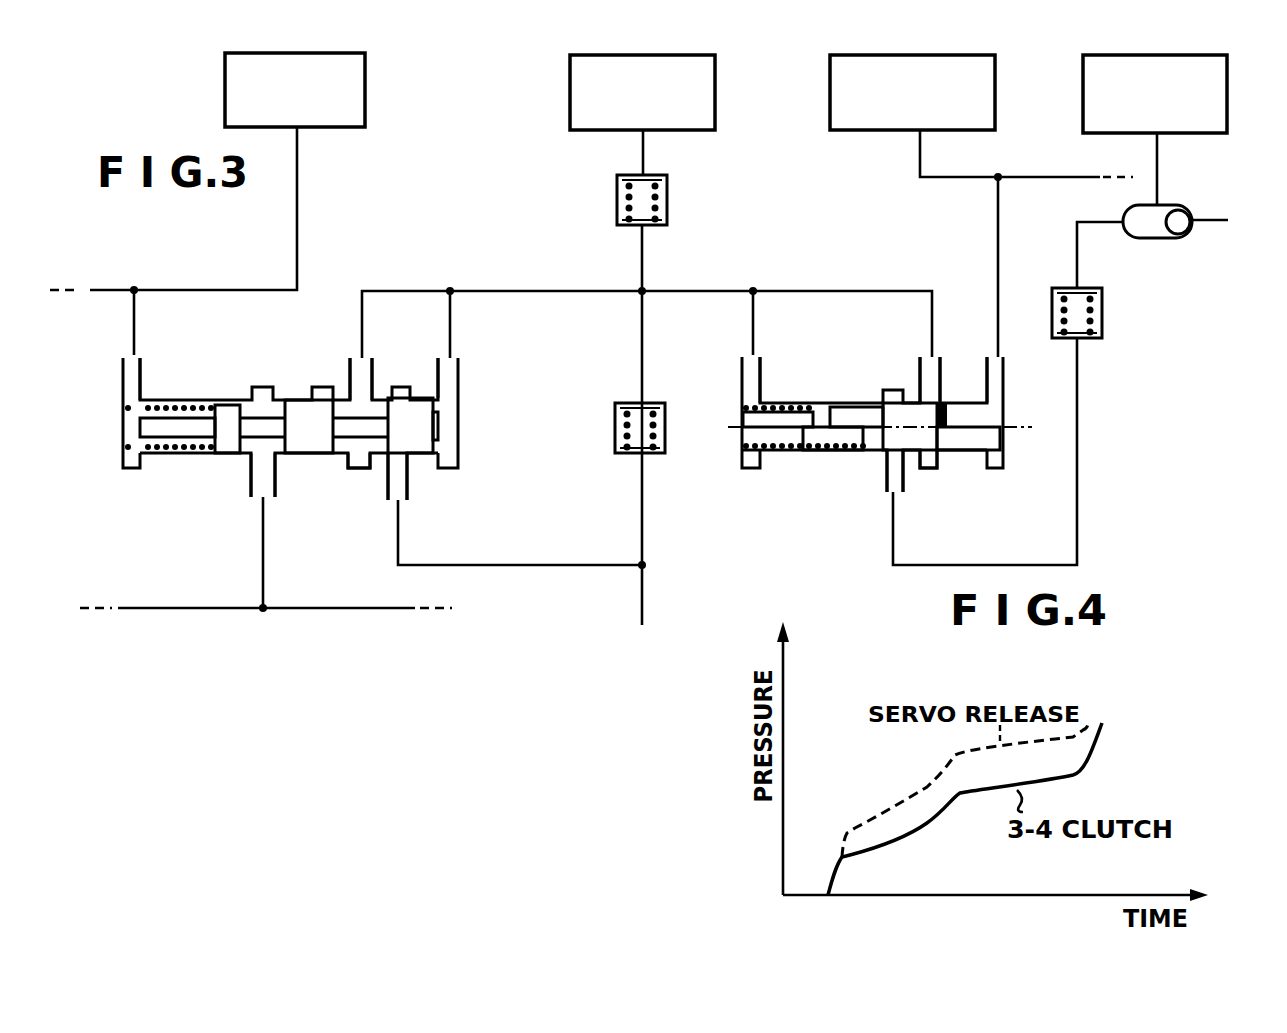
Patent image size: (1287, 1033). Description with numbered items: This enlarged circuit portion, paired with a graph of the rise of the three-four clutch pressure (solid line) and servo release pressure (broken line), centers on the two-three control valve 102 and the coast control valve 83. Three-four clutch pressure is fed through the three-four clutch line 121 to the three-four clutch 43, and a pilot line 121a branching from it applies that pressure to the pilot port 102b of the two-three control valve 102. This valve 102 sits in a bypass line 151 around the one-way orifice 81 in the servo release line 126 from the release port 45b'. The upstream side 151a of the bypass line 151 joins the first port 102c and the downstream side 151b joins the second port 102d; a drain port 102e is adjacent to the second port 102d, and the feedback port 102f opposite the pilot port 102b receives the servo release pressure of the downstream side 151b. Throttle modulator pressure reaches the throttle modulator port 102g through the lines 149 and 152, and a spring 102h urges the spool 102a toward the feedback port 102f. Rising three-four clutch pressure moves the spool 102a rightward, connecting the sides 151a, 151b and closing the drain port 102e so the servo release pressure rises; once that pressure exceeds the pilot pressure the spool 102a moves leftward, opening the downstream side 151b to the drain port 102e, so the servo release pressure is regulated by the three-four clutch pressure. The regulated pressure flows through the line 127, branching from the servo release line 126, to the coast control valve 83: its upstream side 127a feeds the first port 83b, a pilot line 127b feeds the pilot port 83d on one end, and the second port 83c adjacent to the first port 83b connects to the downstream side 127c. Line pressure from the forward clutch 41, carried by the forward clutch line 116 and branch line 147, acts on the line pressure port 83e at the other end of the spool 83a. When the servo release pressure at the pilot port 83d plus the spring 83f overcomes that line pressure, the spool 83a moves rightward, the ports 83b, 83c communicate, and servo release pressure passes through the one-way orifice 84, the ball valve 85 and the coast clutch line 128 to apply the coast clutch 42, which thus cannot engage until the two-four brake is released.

The 3-4 clutch 43 is at (365, 88).
The release port 45b' is at (682, 115).
The forward clutch 41 is at (995, 110).
The coast clutch 42 is at (1227, 105).
The forward clutch line 116 is at (1032, 177).
The coast clutch line 128 is at (1158, 175).
The line 147 is at (1000, 228).
The ball valve 85 is at (1162, 240).
The one-way orifice 84 is at (1103, 323).
The one-way orifice 81 is at (665, 430).
The 3-4 clutch line 121 is at (210, 290).
The pilot line 121a is at (135, 320).
The bypass line 151 is at (557, 424).
The upstream side of the bypass line 151a is at (495, 567).
The downstream side of the bypass line 151b is at (475, 290).
The servo release line 126 is at (643, 362).
The line 152 is at (263, 557).
The line 149 is at (216, 608).
The line 127 is at (913, 392).
The upstream side of the line 127a is at (805, 290).
The pilot line 127b is at (755, 330).
The downstream side of the line 127c is at (948, 565).
The 2-3 control valve 102 is at (332, 417).
The spool 102a is at (300, 420).
The pilot port 102b is at (141, 377).
The first port 102c is at (407, 480).
The second port 102d is at (370, 375).
The drain port 102e is at (317, 473).
The feedback port 102f is at (450, 383).
The throttle modulator port 102g is at (252, 473).
The spring 102h is at (147, 455).
The coast control valve 83 is at (899, 425).
The spool 83a is at (963, 450).
The first port 83b is at (921, 370).
The second port 83c is at (883, 480).
The pilot port 83d is at (762, 377).
The line pressure port 83e is at (1005, 375).
The spring 83f is at (782, 452).